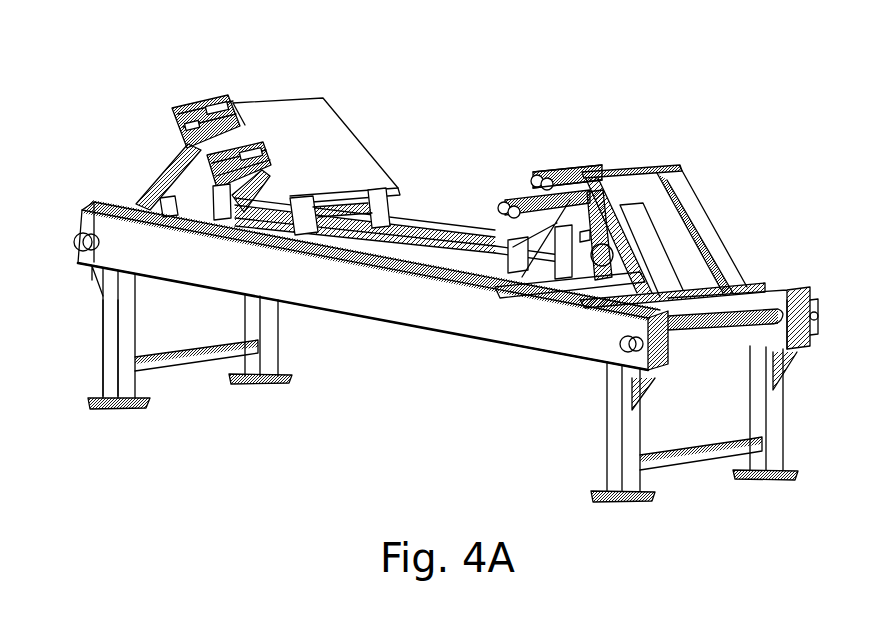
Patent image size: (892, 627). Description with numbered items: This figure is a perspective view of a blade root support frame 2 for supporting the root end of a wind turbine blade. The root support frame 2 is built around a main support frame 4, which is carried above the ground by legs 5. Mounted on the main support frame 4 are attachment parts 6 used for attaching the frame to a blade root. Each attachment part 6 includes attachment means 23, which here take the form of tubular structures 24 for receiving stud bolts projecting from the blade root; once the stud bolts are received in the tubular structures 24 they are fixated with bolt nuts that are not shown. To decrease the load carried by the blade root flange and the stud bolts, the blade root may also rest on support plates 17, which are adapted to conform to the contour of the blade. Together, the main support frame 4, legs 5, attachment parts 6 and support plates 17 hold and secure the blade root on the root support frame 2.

The blade root support frame 2 is at (271, 417).
The main support frame 4 is at (447, 181).
The legs 5 is at (102, 323).
The attachment parts 6 is at (204, 85).
The support plates 17 is at (277, 100).
The attachment means 23 is at (176, 128).
The tubular structures 24 is at (553, 172).